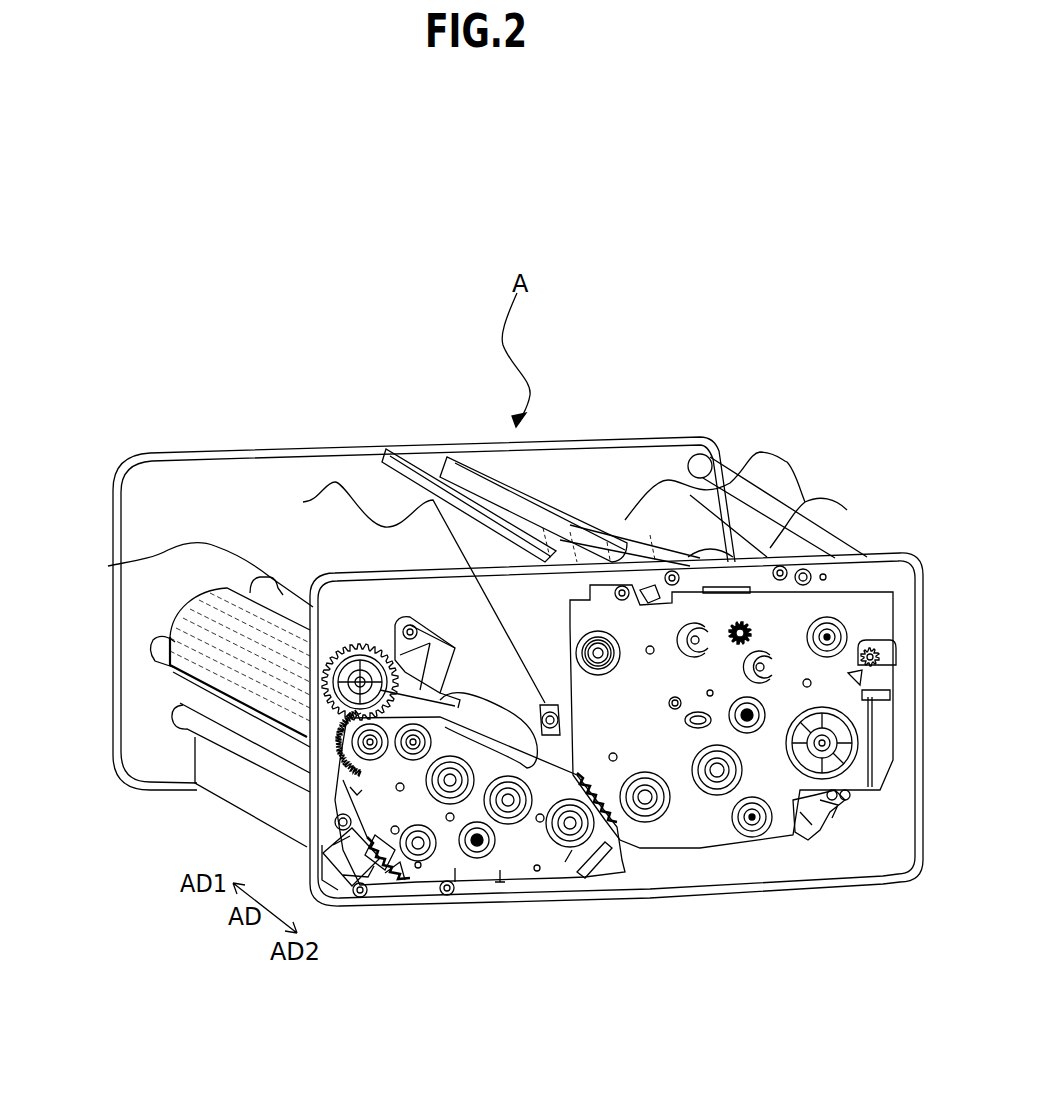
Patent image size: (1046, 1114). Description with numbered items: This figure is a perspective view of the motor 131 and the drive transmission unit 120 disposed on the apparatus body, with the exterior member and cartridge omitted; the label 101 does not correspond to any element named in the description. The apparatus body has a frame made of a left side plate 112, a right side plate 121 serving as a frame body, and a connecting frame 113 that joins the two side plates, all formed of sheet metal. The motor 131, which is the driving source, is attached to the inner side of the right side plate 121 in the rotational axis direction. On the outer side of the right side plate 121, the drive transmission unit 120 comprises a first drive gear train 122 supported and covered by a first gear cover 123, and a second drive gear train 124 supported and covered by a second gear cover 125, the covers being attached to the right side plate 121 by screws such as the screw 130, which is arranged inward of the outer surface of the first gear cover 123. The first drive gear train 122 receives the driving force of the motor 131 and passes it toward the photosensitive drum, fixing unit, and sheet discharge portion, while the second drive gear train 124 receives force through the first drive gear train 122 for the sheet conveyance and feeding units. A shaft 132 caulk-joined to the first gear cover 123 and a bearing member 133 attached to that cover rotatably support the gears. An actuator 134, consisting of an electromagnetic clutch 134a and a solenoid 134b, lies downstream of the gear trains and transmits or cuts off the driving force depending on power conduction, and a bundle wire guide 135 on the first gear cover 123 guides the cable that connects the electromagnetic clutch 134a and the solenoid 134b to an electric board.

The drive coupling 101 is at (598, 647).
The left side plate 112 is at (143, 492).
The connecting frame 113 is at (108, 566).
The drive transmission unit 120 is at (865, 583).
The right side plate 121 is at (340, 590).
The first drive gear train 122 is at (847, 510).
The first gear cover 123 is at (697, 822).
The second drive gear train 124 is at (400, 868).
The second gear cover 125 is at (513, 863).
The screw 130 is at (415, 620).
The motor 131 is at (743, 623).
The shaft 132 is at (676, 710).
The bearing member 133 is at (705, 550).
The actuator 134 is at (587, 680).
The electromagnetic clutch 134a is at (895, 930).
The solenoid 134b is at (345, 890).
The bundle wire guide 135 is at (805, 840).